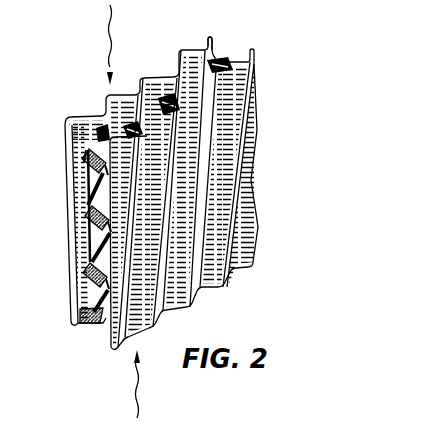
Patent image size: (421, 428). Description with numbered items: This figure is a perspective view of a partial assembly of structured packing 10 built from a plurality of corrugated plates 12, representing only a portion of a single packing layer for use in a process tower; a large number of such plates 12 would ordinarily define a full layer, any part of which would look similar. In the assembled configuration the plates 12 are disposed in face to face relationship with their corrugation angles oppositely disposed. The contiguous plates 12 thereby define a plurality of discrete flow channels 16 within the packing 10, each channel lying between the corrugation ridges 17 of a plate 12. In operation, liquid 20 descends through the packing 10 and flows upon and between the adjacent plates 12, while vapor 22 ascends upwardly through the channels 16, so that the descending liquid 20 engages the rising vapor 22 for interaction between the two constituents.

The structured packing 10 is at (282, 128).
The plates 12 is at (108, 95).
The flow channels 16 is at (207, 48).
The corrugation ridges 17 is at (254, 198).
The liquid 20 is at (113, 42).
The vapor 22 is at (137, 384).